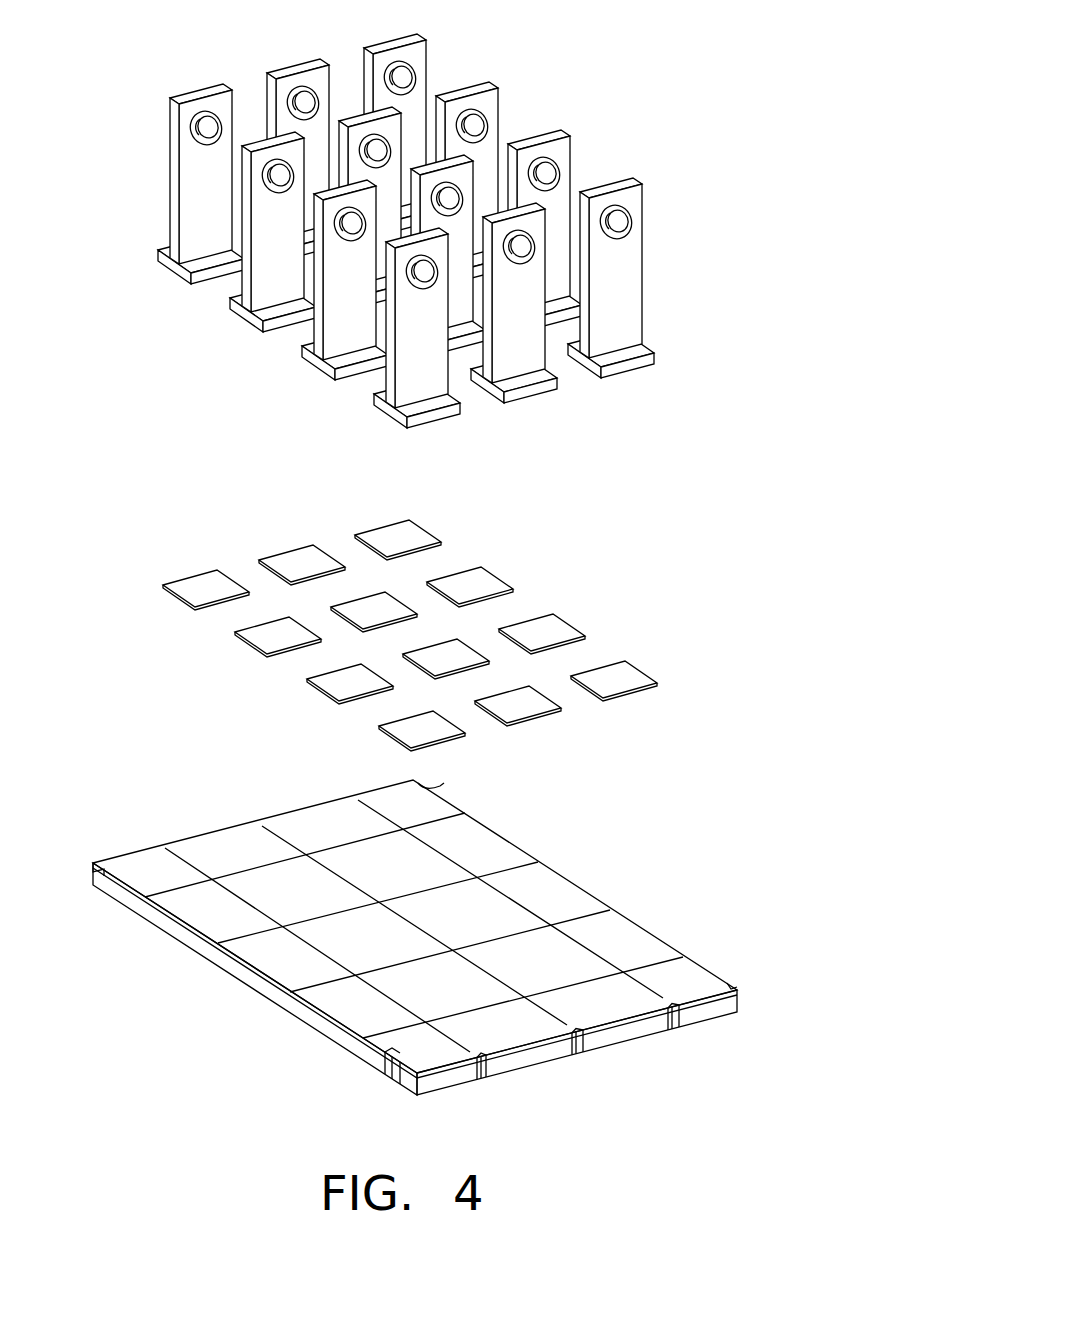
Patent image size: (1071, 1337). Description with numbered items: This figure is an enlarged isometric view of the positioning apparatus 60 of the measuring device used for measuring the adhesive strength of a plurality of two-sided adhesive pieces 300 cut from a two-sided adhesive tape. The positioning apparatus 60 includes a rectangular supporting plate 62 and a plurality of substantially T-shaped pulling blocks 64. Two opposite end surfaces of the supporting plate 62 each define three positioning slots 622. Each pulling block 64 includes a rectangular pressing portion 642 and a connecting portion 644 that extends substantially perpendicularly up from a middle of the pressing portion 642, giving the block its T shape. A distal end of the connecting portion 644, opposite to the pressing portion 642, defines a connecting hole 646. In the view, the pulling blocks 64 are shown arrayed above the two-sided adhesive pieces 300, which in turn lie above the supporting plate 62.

The positioning apparatus 60 is at (467, 225).
The supporting plate 62 is at (434, 950).
The positioning slots 622 is at (675, 1020).
The pulling block 64 is at (672, 302).
The pressing portion 642 is at (640, 368).
The connecting portion 644 is at (625, 285).
The connecting hole 646 is at (624, 219).
The two-sided adhesive pieces 300 is at (192, 575).